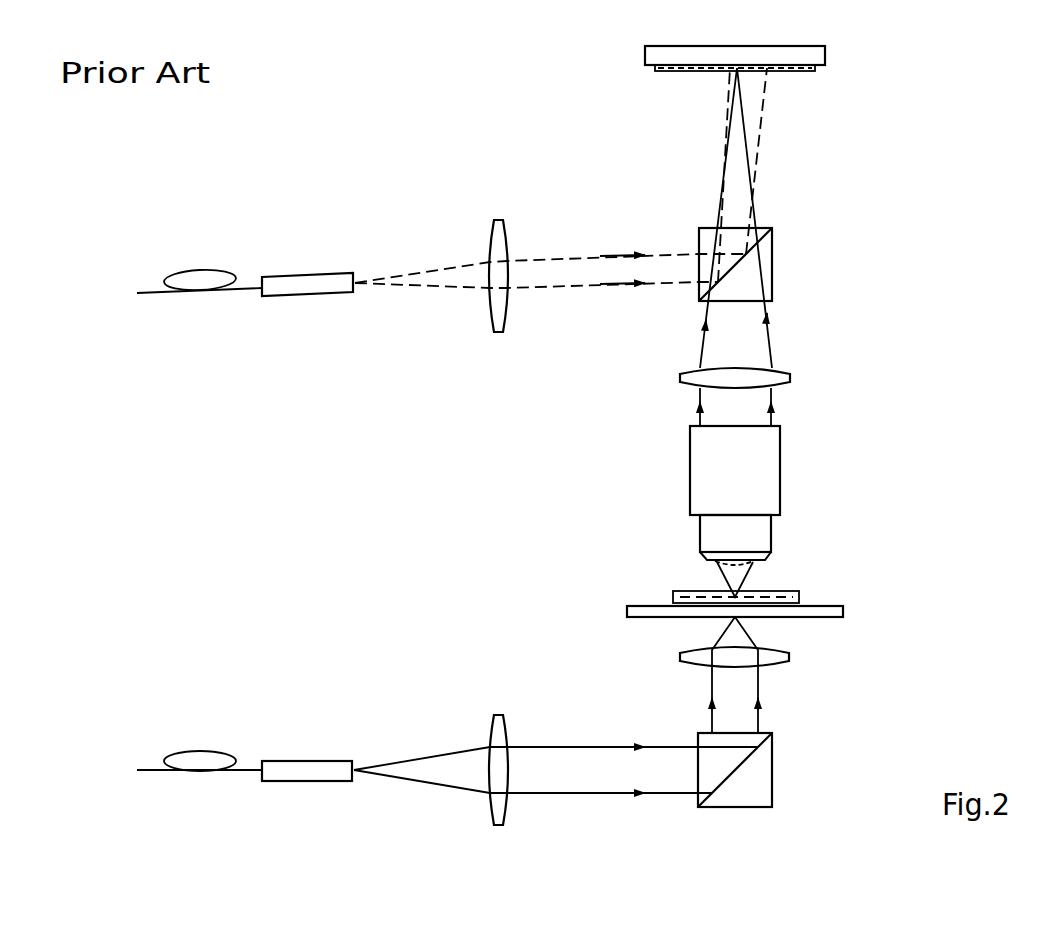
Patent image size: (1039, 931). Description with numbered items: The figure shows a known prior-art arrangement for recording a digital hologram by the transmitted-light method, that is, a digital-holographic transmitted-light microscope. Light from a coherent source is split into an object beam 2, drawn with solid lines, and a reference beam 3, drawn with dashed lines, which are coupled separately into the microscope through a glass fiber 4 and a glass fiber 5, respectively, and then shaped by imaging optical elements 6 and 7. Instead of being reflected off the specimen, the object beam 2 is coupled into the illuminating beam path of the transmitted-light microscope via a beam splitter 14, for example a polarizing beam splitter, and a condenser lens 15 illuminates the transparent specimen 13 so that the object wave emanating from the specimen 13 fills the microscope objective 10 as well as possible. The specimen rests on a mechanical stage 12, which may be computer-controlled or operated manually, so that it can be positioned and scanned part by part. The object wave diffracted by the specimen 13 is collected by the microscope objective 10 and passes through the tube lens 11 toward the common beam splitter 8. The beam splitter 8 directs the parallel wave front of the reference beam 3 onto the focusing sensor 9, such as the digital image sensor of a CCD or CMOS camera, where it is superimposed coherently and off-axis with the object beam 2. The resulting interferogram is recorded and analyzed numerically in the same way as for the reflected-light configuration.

The object beam 2 is at (438, 754).
The reference beam 3 is at (438, 268).
The glass fiber 4 is at (308, 761).
The glass fiber 5 is at (313, 275).
The imaging optical element 6 is at (505, 721).
The imaging optical element 7 is at (505, 236).
The beam splitter 8 is at (773, 246).
The focusing sensor 9 is at (826, 66).
The microscope objective 10 is at (781, 460).
The tube lens 11 is at (791, 378).
The mechanical stage 12 is at (640, 606).
The transparent specimen 13 is at (793, 592).
The beam splitter 14 is at (773, 768).
The condenser lens 15 is at (790, 660).